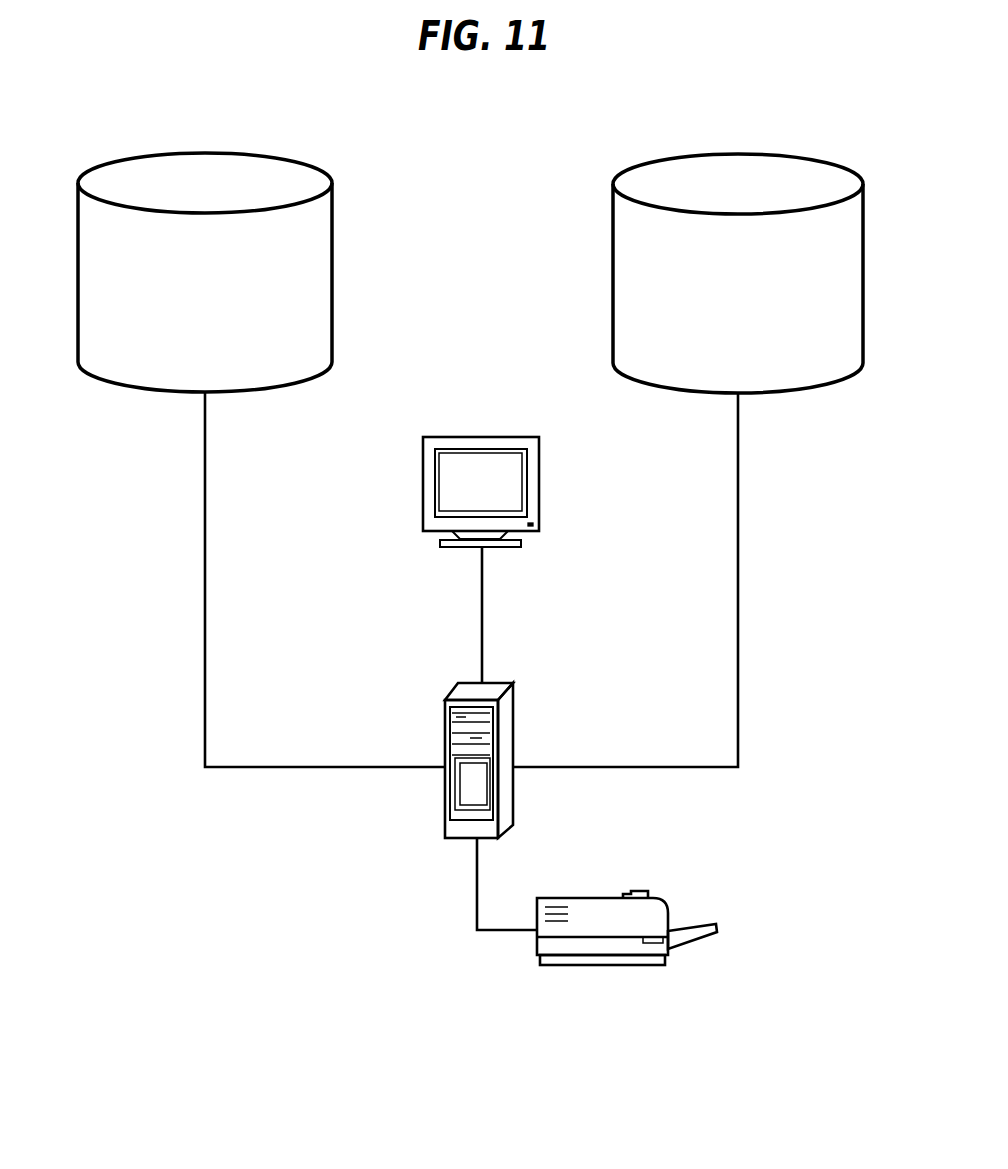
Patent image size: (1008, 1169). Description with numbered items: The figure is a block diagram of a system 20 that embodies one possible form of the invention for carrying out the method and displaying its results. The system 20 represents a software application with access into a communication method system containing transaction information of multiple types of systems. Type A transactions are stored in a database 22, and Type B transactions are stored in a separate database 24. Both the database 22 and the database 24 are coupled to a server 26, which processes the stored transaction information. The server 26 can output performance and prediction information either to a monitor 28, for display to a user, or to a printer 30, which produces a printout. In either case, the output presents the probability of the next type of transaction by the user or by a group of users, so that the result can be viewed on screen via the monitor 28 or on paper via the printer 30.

The system 20 is at (215, 878).
The database 22 is at (124, 366).
The database 24 is at (817, 365).
The server 26 is at (516, 703).
The monitor 28 is at (540, 492).
The printer 30 is at (597, 898).